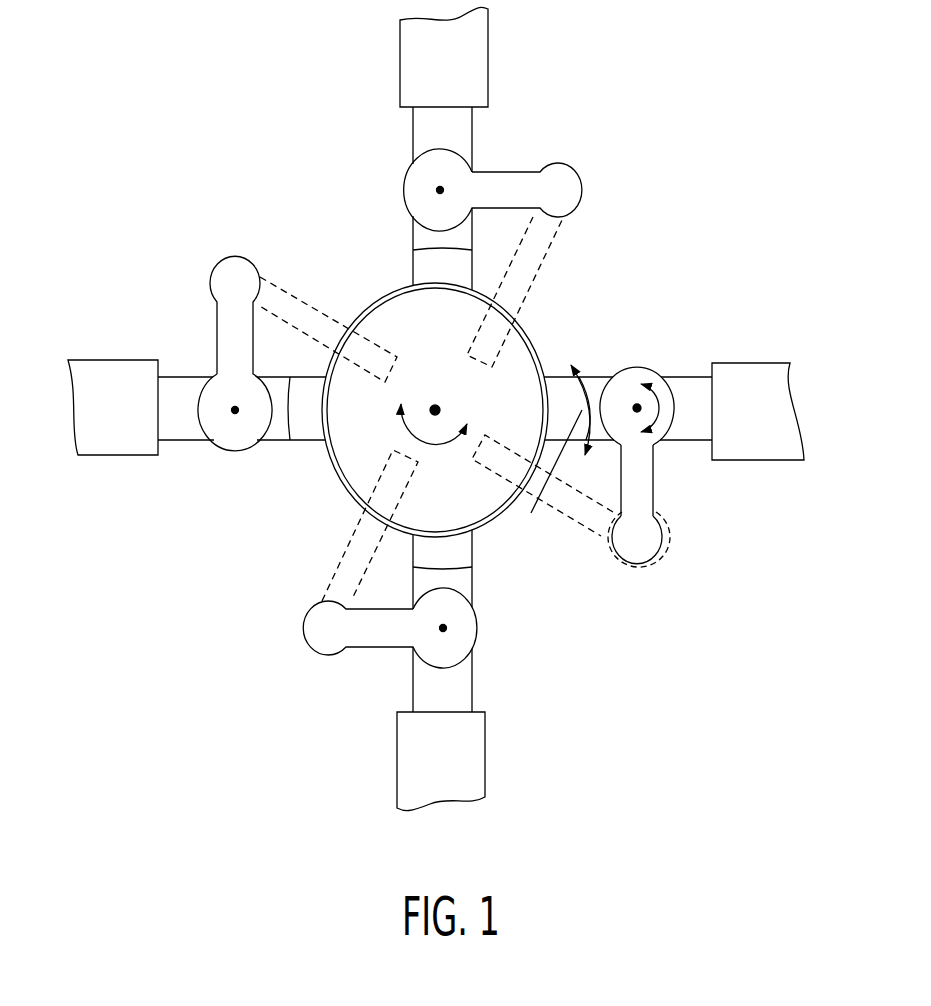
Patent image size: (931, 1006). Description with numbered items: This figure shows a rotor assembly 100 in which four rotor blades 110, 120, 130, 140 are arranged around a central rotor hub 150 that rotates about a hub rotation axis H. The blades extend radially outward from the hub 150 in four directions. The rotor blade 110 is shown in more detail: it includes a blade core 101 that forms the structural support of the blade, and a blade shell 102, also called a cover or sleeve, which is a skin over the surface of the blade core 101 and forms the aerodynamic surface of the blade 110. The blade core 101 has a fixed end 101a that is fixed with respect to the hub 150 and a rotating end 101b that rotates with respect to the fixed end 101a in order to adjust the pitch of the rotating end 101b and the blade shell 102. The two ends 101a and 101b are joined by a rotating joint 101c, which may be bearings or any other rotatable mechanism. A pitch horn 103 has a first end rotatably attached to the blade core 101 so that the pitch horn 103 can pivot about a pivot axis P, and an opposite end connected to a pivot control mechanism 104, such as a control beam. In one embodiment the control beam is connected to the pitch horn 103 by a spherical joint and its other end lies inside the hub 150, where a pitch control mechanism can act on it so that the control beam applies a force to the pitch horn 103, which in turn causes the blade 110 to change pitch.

The rotor assembly 100 is at (723, 162).
The blade core 101 is at (693, 292).
The fixed end 101a is at (566, 385).
The rotating end 101b is at (601, 386).
The rotating joint 101c is at (547, 481).
The blade shell 102 is at (753, 374).
The pitch horn 103 is at (656, 492).
The pivot control mechanism 104 is at (583, 528).
The rotor blade 110 is at (674, 426).
The rotor blade 120 is at (528, 674).
The rotor blade 130 is at (218, 504).
The rotor blade 140 is at (358, 52).
The rotor hub 150 is at (368, 300).
The hub rotation axis H is at (442, 409).
The pivot axis P is at (635, 408).